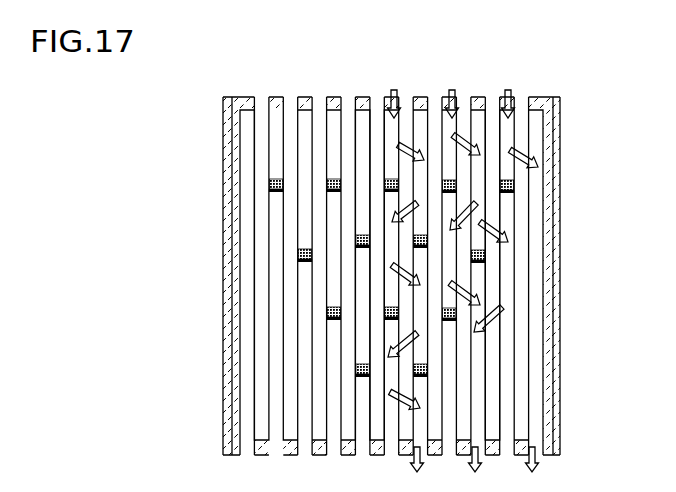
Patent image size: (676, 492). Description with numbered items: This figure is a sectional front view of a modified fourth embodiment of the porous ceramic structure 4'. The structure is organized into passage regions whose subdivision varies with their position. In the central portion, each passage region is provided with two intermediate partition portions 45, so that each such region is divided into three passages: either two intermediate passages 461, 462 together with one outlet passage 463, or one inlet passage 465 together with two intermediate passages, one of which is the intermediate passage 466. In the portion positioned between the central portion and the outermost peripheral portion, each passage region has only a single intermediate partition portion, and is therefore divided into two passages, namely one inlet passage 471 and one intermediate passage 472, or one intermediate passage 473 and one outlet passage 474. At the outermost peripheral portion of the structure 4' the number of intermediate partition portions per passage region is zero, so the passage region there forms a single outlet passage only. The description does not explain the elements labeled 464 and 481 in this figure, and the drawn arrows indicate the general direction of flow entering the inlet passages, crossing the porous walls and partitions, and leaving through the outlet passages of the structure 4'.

The porous ceramic structure 4' is at (408, 253).
The intermediate partition portion 45 is at (507, 183).
The intermediate passage 461 is at (432, 167).
The intermediate passage 462 is at (520, 290).
The outlet passage 463 is at (478, 420).
The inlet channel 464 is at (390, 130).
The inlet passage 465 is at (367, 188).
The intermediate passage 466 is at (388, 440).
The inlet passage 471 is at (262, 133).
The intermediate passage 472 is at (262, 218).
The intermediate passage 473 is at (275, 182).
The outlet passage 474 is at (300, 262).
The end plate 481 is at (245, 332).